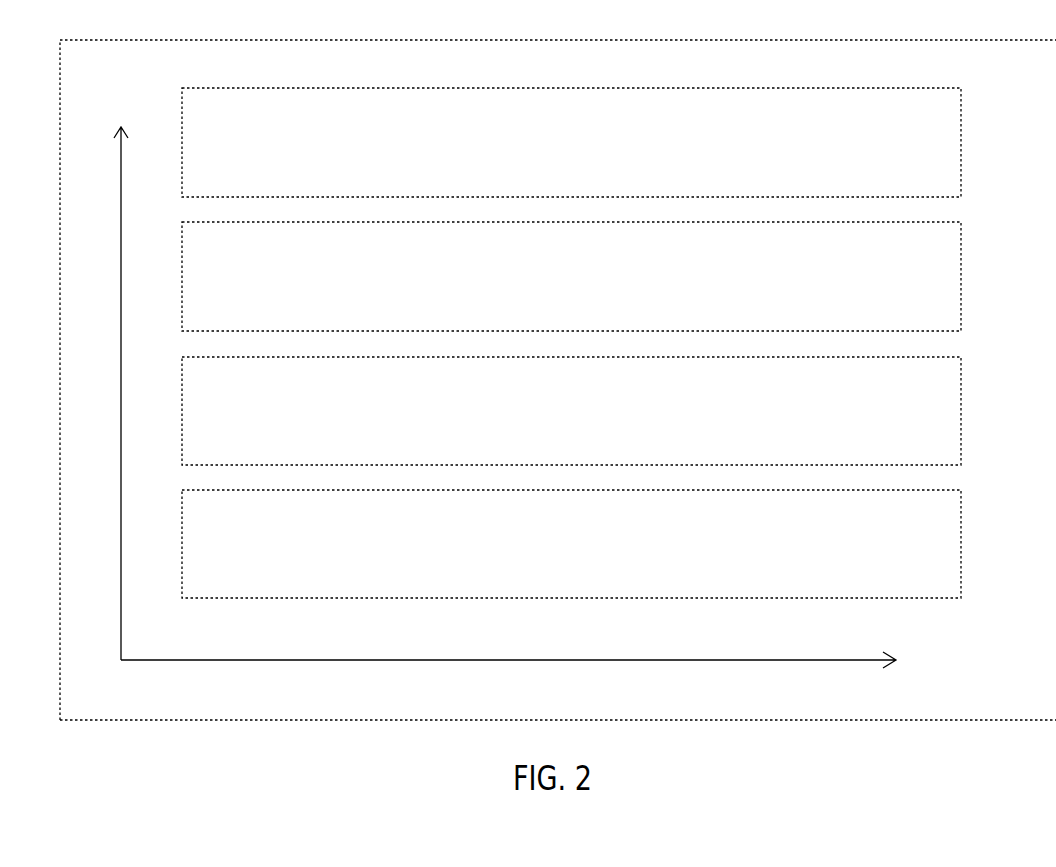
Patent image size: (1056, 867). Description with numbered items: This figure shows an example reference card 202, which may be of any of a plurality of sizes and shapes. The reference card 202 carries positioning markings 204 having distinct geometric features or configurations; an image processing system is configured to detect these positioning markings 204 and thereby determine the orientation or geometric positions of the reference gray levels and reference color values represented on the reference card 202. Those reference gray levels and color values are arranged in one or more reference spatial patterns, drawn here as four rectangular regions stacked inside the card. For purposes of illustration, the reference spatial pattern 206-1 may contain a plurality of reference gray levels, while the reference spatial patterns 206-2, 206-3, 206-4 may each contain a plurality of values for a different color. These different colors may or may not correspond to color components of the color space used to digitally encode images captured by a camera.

The reference card 202 is at (122, 697).
The positioning markings 204 is at (817, 660).
The reference spatial pattern 206-1 is at (961, 137).
The reference spatial pattern 206-2 is at (961, 270).
The reference spatial pattern 206-3 is at (961, 403).
The reference spatial pattern 206-4 is at (961, 538).